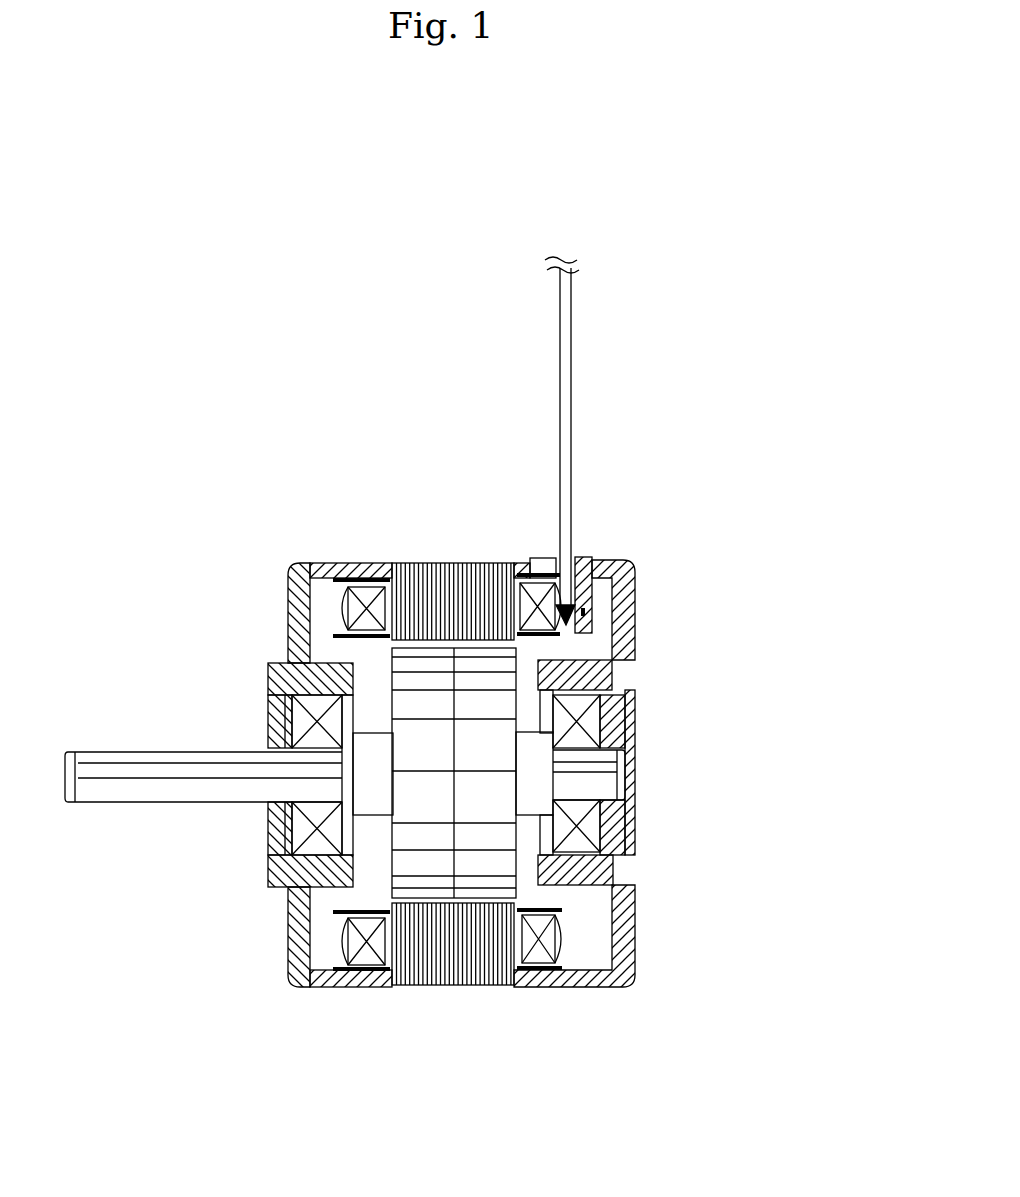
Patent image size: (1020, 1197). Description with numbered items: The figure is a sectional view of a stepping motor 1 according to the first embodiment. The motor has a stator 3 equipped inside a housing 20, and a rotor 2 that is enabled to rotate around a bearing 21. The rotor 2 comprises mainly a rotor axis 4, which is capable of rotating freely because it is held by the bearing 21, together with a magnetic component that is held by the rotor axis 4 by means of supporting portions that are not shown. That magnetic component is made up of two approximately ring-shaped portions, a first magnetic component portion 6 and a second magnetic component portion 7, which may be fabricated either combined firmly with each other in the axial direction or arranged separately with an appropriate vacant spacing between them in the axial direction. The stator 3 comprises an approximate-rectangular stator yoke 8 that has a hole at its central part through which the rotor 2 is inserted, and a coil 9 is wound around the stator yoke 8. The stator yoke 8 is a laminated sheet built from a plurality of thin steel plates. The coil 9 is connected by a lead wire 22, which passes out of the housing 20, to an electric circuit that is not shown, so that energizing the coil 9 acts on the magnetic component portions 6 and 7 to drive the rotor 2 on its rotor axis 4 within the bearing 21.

The motor 1 is at (783, 318).
The rotor 2 is at (190, 728).
The stator 3 is at (474, 517).
The rotor axis 4 is at (146, 790).
The first magnetic component portion 6 is at (403, 883).
The second magnetic component portion 7 is at (505, 883).
The stator yoke 8 is at (423, 595).
The coil 9 is at (368, 590).
The housing 20 is at (668, 553).
The bearing 21 is at (300, 827).
The lead wire 22 is at (565, 392).